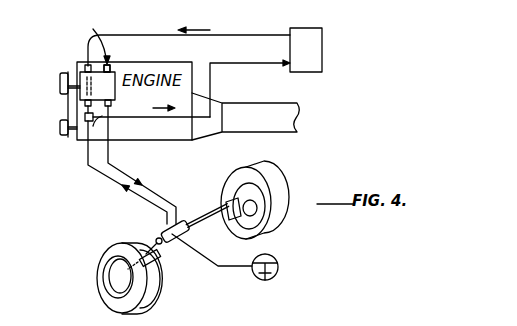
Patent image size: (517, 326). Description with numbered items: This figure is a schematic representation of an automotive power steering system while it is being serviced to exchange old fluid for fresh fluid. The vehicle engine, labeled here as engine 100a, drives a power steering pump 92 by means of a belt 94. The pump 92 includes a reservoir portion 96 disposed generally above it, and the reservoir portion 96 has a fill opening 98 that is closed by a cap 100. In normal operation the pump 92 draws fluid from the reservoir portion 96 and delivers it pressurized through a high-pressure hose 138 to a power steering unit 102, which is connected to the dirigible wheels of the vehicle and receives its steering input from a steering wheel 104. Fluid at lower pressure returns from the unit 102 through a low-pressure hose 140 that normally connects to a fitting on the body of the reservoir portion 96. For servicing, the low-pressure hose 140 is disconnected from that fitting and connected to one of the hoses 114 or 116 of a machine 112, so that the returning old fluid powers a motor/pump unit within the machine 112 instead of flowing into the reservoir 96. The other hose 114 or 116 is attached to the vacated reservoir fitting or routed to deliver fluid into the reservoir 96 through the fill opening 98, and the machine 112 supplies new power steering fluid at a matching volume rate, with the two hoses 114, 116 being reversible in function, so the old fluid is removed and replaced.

The power steering pump 92 is at (79, 72).
The belt 94 is at (62, 108).
The reservoir portion 96 is at (115, 93).
The fill opening 98 is at (91, 40).
The cap 100 is at (112, 64).
The control line 100a is at (188, 62).
The power steering unit 102 is at (156, 231).
The steering wheel 104 is at (281, 260).
The machine 112 is at (323, 52).
The hose 114 is at (150, 118).
The hose 116 is at (155, 34).
The high-pressure hose 138 is at (160, 197).
The low-pressure hose 140 is at (136, 194).